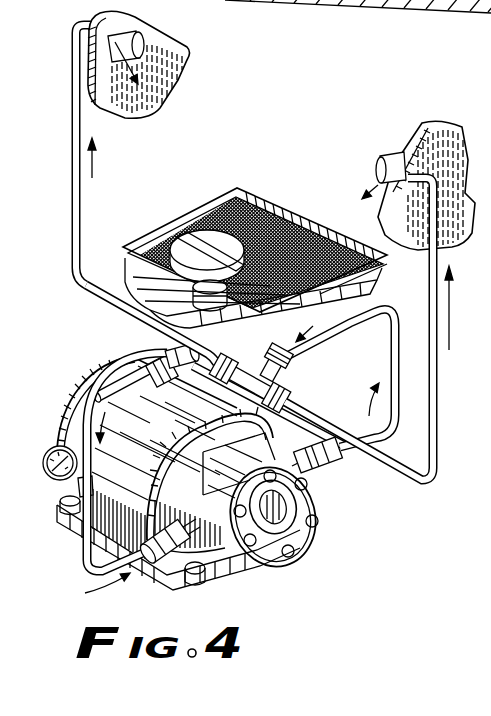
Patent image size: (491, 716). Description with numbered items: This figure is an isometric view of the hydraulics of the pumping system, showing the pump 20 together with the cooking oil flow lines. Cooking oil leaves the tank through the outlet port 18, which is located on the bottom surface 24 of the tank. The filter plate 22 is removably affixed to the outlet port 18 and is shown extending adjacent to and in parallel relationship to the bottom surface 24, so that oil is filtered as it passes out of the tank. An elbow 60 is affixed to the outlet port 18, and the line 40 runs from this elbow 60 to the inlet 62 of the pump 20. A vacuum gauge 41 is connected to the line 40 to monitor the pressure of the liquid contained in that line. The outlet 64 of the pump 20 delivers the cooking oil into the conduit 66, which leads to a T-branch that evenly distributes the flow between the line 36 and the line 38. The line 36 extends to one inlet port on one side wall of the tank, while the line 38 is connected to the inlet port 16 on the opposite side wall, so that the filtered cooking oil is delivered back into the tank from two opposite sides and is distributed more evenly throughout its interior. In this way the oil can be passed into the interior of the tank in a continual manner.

The inlet port 16 is at (183, 62).
The outlet port 18 is at (143, 311).
The pump 20 is at (305, 528).
The filter plate 22 is at (226, 200).
The bottom surface 24 is at (138, 276).
The line 36 is at (418, 487).
The line 38 is at (71, 139).
The line 40 is at (89, 406).
The vacuum gauge 41 is at (53, 446).
The elbow 60 is at (153, 332).
The inlet 62 is at (163, 573).
The outlet 64 is at (331, 461).
The conduit 66 is at (376, 312).